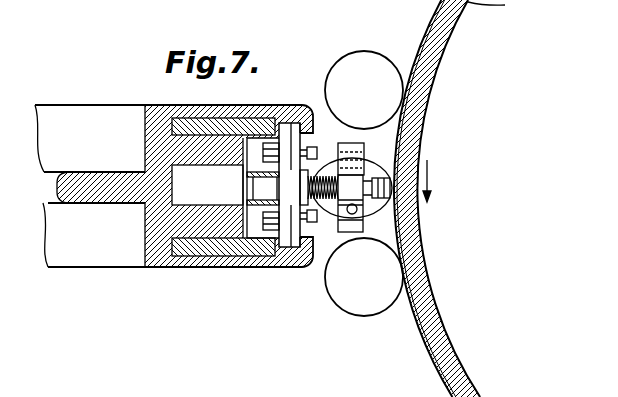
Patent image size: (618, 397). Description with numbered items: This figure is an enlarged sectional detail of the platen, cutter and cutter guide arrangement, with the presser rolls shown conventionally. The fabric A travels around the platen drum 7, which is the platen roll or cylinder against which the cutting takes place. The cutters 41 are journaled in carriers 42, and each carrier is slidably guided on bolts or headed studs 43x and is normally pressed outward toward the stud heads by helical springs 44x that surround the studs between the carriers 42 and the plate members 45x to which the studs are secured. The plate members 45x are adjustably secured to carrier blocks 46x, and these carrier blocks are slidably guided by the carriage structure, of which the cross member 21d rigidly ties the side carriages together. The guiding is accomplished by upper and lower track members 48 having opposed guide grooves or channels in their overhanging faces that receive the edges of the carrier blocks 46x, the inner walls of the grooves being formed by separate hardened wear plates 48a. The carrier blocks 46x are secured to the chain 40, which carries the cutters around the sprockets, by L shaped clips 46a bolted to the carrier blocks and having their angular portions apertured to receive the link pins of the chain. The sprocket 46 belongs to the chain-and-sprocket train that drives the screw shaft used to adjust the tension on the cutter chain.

The platen drum 7 is at (430, 318).
The cross member 21d is at (133, 247).
The chain 40 is at (242, 168).
The cutters 41 is at (371, 170).
The carriers 42 is at (355, 148).
The bolts or headed studs 43x is at (386, 196).
The helical springs 44x is at (331, 205).
The plate members 45x is at (313, 224).
The sprocket 46 is at (311, 118).
The L shaped clips 46a is at (263, 207).
The carrier blocks 46x is at (296, 105).
The track members 48 is at (247, 116).
The hardened wear plates 48a is at (253, 190).
The fabric A is at (443, 372).